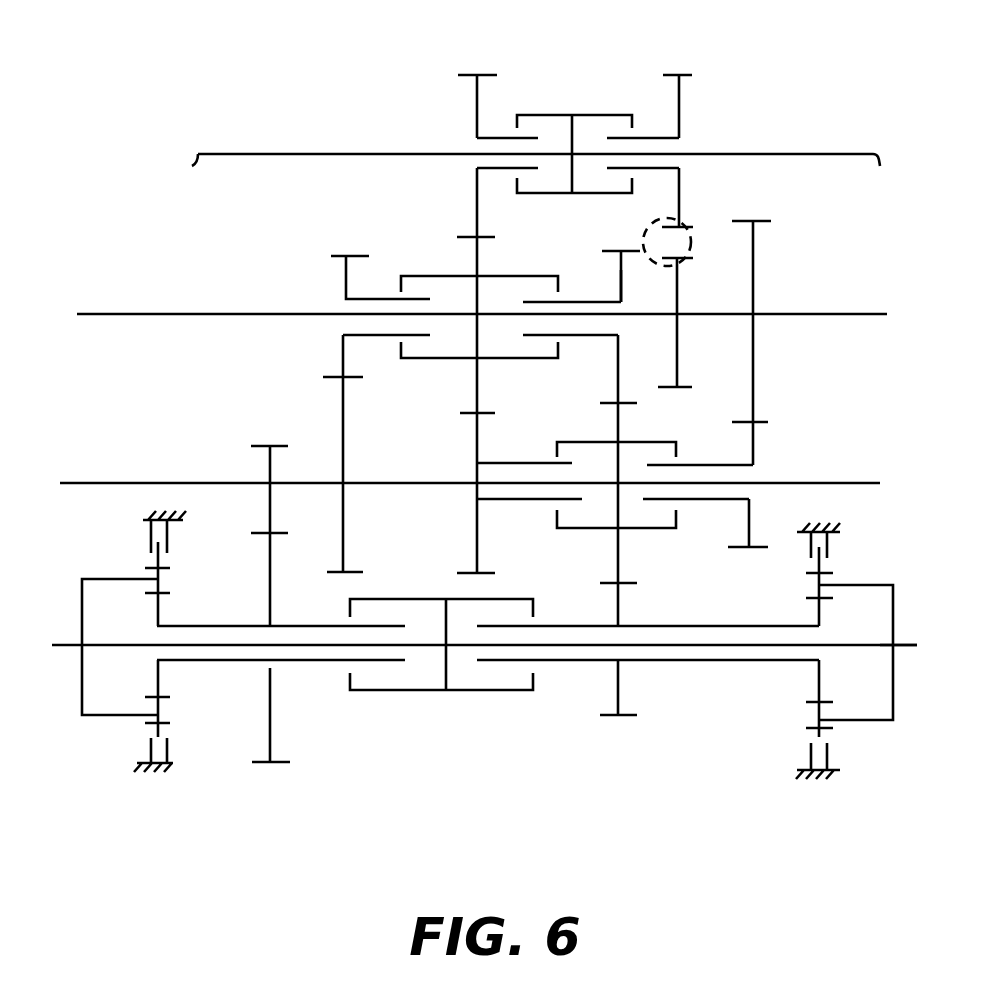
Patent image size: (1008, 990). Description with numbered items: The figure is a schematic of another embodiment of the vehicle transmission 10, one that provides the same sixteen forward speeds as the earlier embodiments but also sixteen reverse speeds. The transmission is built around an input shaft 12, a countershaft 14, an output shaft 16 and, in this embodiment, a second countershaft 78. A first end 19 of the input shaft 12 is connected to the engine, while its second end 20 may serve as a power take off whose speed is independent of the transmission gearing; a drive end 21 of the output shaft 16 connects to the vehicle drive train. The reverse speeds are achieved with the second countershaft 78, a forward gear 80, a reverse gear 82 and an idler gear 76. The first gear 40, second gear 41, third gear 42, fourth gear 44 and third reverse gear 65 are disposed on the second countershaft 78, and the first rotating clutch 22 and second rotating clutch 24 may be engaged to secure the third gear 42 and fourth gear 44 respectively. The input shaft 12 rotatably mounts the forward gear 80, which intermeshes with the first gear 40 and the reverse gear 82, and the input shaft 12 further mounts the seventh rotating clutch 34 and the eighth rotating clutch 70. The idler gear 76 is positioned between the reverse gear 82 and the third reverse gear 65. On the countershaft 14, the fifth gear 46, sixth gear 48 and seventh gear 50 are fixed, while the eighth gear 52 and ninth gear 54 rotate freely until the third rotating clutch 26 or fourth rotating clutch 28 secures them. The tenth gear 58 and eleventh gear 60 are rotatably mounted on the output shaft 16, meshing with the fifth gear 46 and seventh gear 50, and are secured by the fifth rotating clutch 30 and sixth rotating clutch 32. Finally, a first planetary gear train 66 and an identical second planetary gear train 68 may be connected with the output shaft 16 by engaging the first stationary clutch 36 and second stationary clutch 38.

The vehicle transmission 10 is at (266, 58).
The input shaft 12 is at (351, 153).
The countershaft 14 is at (107, 482).
The output shaft 16 is at (58, 640).
The first end 19 is at (192, 166).
The second end 20 is at (880, 166).
The drive end 21 is at (910, 648).
The first rotating clutch 22 is at (425, 282).
The second rotating clutch 24 is at (548, 282).
The third rotating clutch 26 is at (567, 450).
The fourth rotating clutch 28 is at (676, 450).
The fifth rotating clutch 30 is at (390, 612).
The sixth rotating clutch 32 is at (520, 612).
The seventh rotating clutch 34 is at (530, 128).
The first stationary clutch 36 is at (150, 530).
The second stationary clutch 38 is at (827, 545).
The first gear 40 is at (480, 262).
The second gear 41 is at (753, 272).
The third gear 42 is at (346, 275).
The fourth gear 44 is at (621, 293).
The fifth gear 46 is at (270, 460).
The sixth gear 48 is at (343, 448).
The seventh gear 50 is at (618, 422).
The eighth gear 52 is at (480, 445).
The ninth gear 54 is at (753, 445).
The tenth gear 58 is at (270, 590).
The eleventh gear 60 is at (618, 600).
The third reverse gear 65 is at (678, 300).
The first planetary gear train 66 is at (120, 578).
The second planetary gear train 68 is at (867, 583).
The eighth rotating clutch 70 is at (608, 128).
The idler gear 76 is at (683, 238).
The second countershaft 78 is at (237, 316).
The forward gear 80 is at (477, 105).
The reverse gear 82 is at (680, 107).